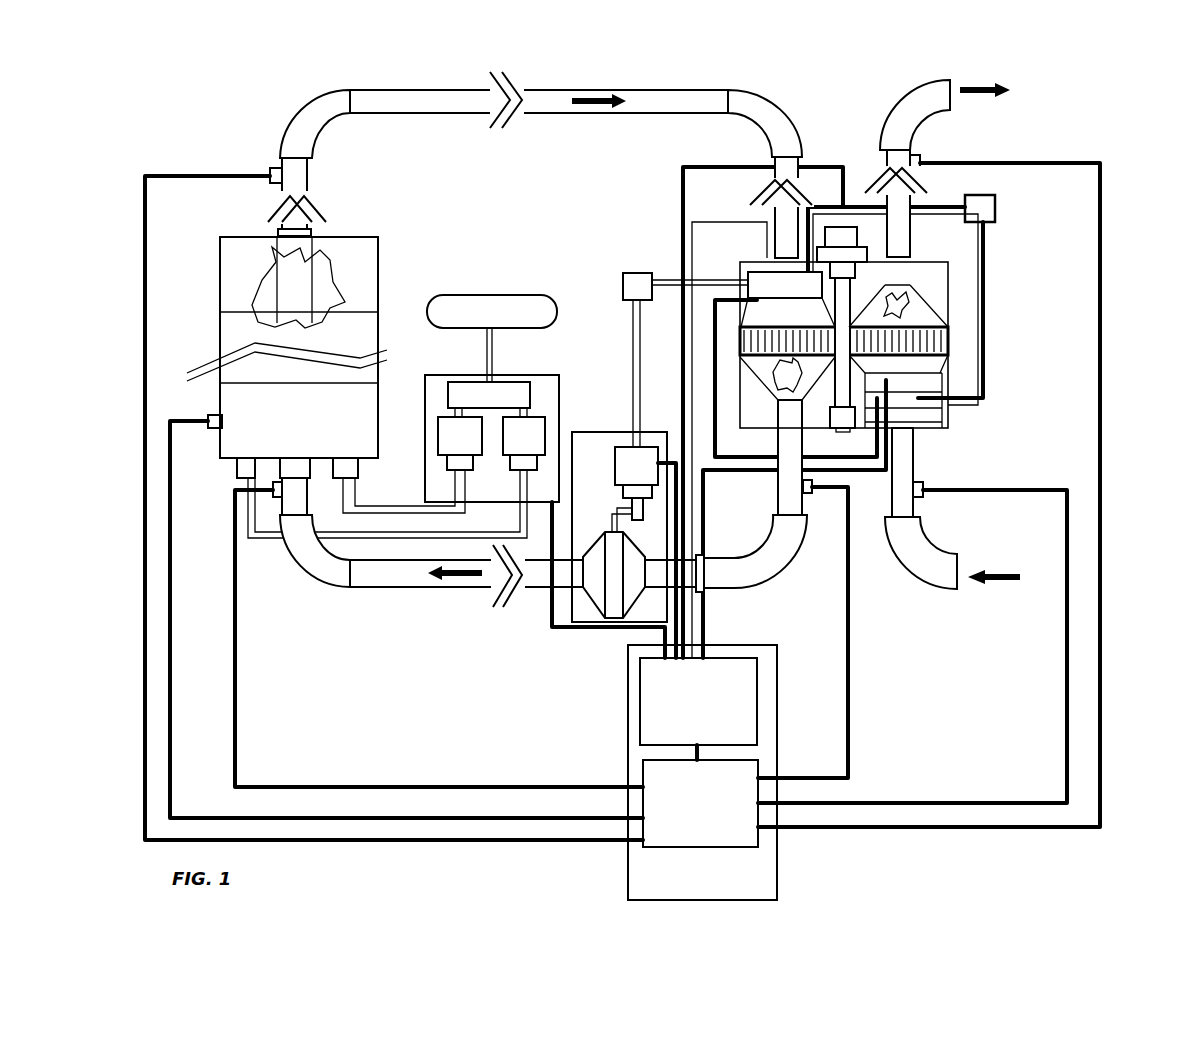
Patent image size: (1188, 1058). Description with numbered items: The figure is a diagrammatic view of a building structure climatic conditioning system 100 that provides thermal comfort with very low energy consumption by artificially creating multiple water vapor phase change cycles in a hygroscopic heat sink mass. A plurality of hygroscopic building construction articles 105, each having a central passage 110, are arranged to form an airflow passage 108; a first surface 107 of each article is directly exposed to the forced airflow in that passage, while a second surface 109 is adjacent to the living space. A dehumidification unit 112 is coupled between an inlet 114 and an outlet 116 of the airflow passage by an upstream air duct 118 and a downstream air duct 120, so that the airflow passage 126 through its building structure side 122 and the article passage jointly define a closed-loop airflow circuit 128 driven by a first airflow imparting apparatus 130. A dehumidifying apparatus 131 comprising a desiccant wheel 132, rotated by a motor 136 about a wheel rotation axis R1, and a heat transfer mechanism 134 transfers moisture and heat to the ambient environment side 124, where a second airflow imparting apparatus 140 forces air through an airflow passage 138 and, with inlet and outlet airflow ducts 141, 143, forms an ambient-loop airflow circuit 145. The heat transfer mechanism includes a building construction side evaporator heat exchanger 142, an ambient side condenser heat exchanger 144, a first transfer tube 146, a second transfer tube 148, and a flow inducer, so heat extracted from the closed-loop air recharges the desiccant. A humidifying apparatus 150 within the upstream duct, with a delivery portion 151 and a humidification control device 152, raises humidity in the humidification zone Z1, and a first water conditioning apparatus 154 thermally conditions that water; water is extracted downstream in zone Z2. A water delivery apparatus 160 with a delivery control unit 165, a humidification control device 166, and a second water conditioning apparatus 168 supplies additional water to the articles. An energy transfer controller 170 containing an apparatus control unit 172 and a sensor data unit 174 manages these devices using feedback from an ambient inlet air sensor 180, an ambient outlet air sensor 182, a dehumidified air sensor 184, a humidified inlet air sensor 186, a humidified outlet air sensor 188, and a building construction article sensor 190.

The building structure climatic conditioning system 100 is at (272, 90).
The building construction articles 105 is at (238, 262).
The first surface 107 is at (262, 287).
The airflow passage 108 is at (272, 250).
The second surface 109 is at (378, 273).
The central passage 110 is at (298, 275).
The dehumidification unit 112 is at (948, 418).
The inlet 114 is at (277, 460).
The outlet 116 is at (278, 232).
The upstream air duct 118 is at (403, 576).
The downstream air duct 120 is at (528, 90).
The building structure side 122 is at (741, 412).
The ambient environment side 124 is at (943, 280).
The airflow passage 126 is at (782, 383).
The closed-loop airflow circuit 128 is at (370, 584).
The first airflow imparting apparatus 130 is at (780, 307).
The dehumidifying apparatus 131 is at (953, 332).
The desiccant wheel 132 is at (945, 348).
The heat transfer mechanism 134 is at (714, 318).
The motor 136 is at (836, 233).
The airflow passage 138 is at (945, 307).
The second airflow imparting apparatus 140 is at (962, 378).
The inlet airflow duct 141 is at (893, 500).
The building construction side evaporator heat exchanger 142 is at (768, 284).
The outlet airflow duct 143 is at (895, 155).
The ambient side condenser heat exchanger 144 is at (905, 425).
The ambient-loop airflow circuit 145 is at (902, 232).
The first transfer tube 146 is at (722, 298).
The second transfer tube 148 is at (950, 207).
The humidifying apparatus 150 is at (570, 607).
The delivery portion 151 is at (612, 605).
The humidification control device 152 is at (623, 460).
The first water conditioning apparatus 154 is at (623, 287).
The water delivery apparatus 160 is at (447, 374).
The delivery control unit 165 is at (425, 395).
The humidification control device 166 is at (440, 438).
The second water conditioning apparatus 168 is at (503, 385).
The energy transfer controller 170 is at (628, 882).
The apparatus control unit 172 is at (748, 670).
The sensor data unit 174 is at (755, 818).
The ambient inlet air sensor 180 is at (922, 490).
The ambient outlet air sensor 182 is at (920, 160).
The dehumidified air sensor 184 is at (808, 493).
The humidified inlet air sensor 186 is at (277, 497).
The humidified outlet air sensor 188 is at (274, 168).
The building construction article sensor 190 is at (210, 429).
The humidification zone Z1 is at (482, 587).
The downstream zone Z2 is at (645, 90).
The wheel rotation axis R1 is at (843, 155).